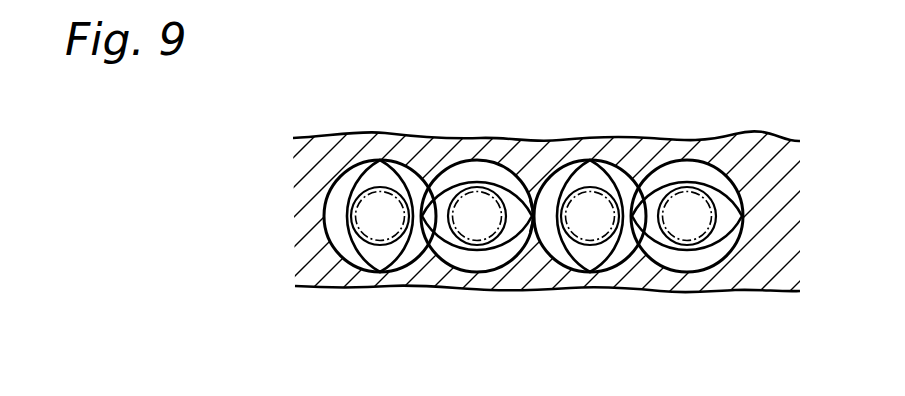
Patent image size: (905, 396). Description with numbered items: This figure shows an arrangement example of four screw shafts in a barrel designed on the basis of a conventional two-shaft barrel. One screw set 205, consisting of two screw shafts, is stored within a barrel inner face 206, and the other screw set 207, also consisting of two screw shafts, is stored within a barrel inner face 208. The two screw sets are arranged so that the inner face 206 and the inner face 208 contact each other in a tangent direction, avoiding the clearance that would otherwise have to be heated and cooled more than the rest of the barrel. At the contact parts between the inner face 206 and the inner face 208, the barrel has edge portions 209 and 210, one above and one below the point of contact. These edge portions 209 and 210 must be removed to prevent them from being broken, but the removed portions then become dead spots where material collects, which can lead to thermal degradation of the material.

The one screw set 205 is at (426, 268).
The barrel inner face 206 is at (477, 244).
The other screw set 207 is at (639, 272).
The barrel inner face 208 is at (590, 245).
The edge portion 209 is at (533, 198).
The edge portion 210 is at (533, 238).